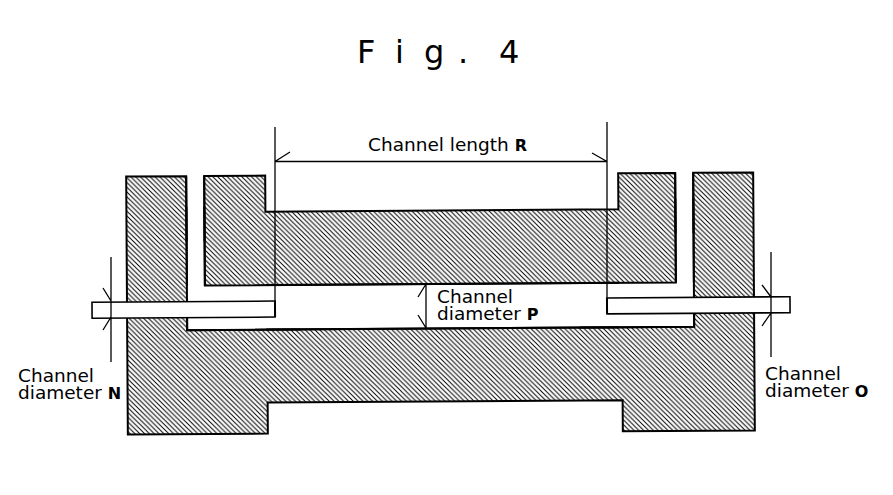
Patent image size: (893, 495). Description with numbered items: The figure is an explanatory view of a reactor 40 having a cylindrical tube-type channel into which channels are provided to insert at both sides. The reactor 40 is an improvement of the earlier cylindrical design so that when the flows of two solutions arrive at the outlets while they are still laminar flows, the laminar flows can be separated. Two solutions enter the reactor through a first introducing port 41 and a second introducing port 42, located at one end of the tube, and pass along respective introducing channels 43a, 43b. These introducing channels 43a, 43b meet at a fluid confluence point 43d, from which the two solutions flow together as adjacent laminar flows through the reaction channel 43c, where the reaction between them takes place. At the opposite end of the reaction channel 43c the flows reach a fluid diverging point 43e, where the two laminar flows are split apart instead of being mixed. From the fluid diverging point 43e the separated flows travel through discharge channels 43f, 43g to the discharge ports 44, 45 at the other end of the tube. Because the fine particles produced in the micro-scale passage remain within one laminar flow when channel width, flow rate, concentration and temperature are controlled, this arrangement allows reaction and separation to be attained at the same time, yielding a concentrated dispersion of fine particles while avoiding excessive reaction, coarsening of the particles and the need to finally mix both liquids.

The reactor 40 is at (735, 173).
The introducing port 41 is at (93, 302).
The introducing port 42 is at (196, 176).
The introducing channel 43a is at (194, 222).
The introducing channel 43b is at (220, 318).
The reaction channel 43c is at (400, 315).
The fluid confluence point 43d is at (277, 308).
The fluid diverging point 43e is at (608, 305).
The discharge channel 43f is at (662, 317).
The discharge channel 43g is at (687, 218).
The discharge port 44 is at (683, 174).
The discharge port 45 is at (790, 304).